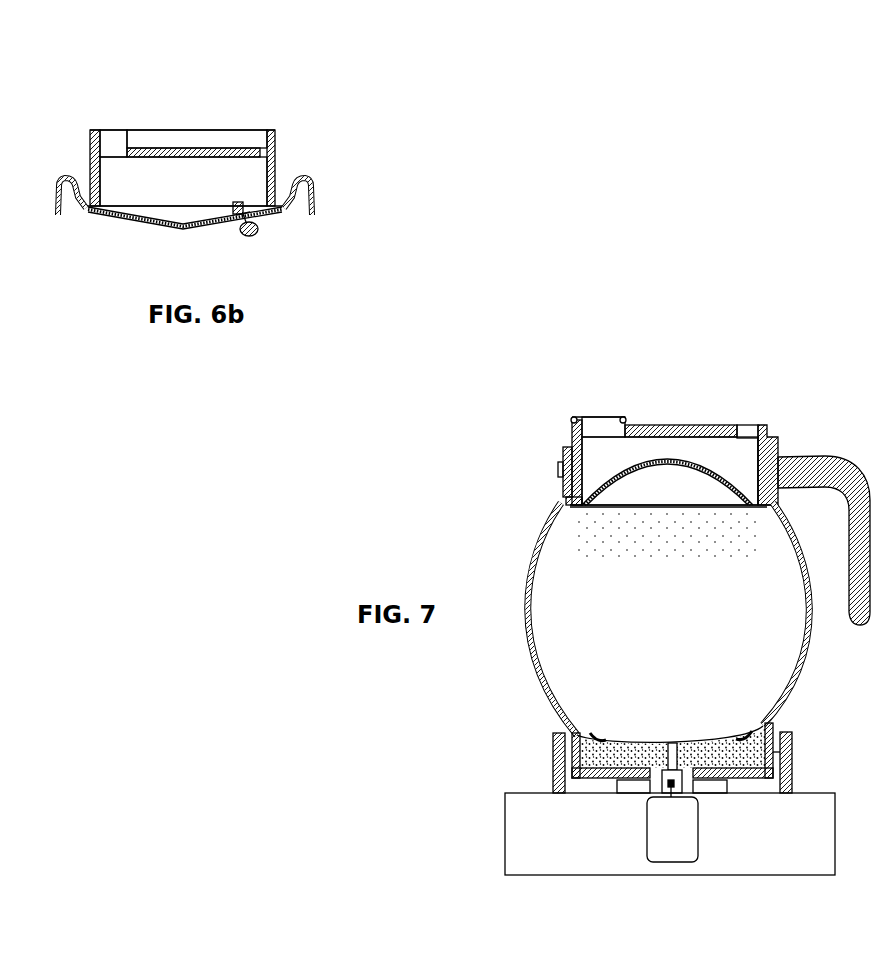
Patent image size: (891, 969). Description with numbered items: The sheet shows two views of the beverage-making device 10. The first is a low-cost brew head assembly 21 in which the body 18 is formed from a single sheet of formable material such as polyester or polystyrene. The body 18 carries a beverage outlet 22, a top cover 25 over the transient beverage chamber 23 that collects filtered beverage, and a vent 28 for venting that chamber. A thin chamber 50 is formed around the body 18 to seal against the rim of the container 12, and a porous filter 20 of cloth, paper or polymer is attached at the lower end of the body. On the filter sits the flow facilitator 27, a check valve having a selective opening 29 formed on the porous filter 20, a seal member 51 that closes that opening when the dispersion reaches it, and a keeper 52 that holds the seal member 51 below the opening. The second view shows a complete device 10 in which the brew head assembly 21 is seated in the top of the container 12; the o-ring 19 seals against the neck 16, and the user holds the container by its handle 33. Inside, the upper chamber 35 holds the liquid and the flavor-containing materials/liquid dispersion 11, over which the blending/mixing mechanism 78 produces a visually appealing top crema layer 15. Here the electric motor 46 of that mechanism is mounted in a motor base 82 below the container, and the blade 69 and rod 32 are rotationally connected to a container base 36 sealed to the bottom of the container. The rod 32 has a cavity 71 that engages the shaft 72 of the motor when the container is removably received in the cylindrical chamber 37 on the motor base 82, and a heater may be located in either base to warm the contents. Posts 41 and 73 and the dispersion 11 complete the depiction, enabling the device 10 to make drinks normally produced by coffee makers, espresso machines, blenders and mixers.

In FIG. 6B, the device 10 is at (286, 114).
In FIG. 7, the device 10 is at (812, 373).
In FIG. 6B, the brew head assembly 21 is at (77, 124).
In FIG. 7, the brew head assembly 21 is at (566, 396).
In FIG. 6B, the body 18 is at (93, 160).
In FIG. 7, the body 18 is at (572, 432).
In FIG. 6B, the beverage outlet 22 is at (107, 140).
In FIG. 7, the beverage outlet 22 is at (598, 423).
In FIG. 6B, the transient beverage chamber 23 is at (158, 173).
In FIG. 7, the transient beverage chamber 23 is at (648, 445).
In FIG. 6B, the top cover 25 is at (192, 150).
In FIG. 7, the top cover 25 is at (717, 427).
In FIG. 6B, the vent 28 is at (238, 147).
In FIG. 7, the vent 28 is at (744, 430).
In FIG. 6B, the porous filter 20 is at (133, 220).
In FIG. 7, the porous filter 20 is at (677, 462).
In FIG. 6B, the thin chamber 50 is at (60, 197).
In FIG. 6B, the flow facilitator 27 is at (275, 230).
In FIG. 7, the flow facilitator 27 is at (739, 466).
In FIG. 6B, the keeper 52 is at (237, 205).
In FIG. 6B, the seal member 51 is at (256, 235).
In FIG. 6B, the selective opening 29 is at (240, 218).
In FIG. 7, the neck 16 is at (567, 487).
In FIG. 7, the o-ring 19 is at (570, 497).
In FIG. 7, the handle 33 is at (855, 553).
In FIG. 7, the top crema layer 15 is at (557, 540).
In FIG. 7, the upper chamber 35 is at (799, 692).
In FIG. 7, the container 12 is at (514, 615).
In FIG. 7, the dispersion 11 is at (563, 643).
In FIG. 7, the blade 69 is at (613, 742).
In FIG. 7, the blending/mixing mechanism 78 is at (689, 722).
In FIG. 7, the container base 36 is at (773, 725).
In FIG. 7, the heating plate 41 is at (603, 780).
In FIG. 7, the rod 32 is at (552, 770).
In FIG. 7, the right post 73 is at (793, 772).
In FIG. 7, the cylindrical chamber 37 is at (788, 755).
In FIG. 7, the cavity 71 is at (683, 775).
In FIG. 7, the shaft 72 is at (682, 787).
In FIG. 7, the electric motor 46 is at (650, 847).
In FIG. 7, the motor base 82 is at (830, 828).